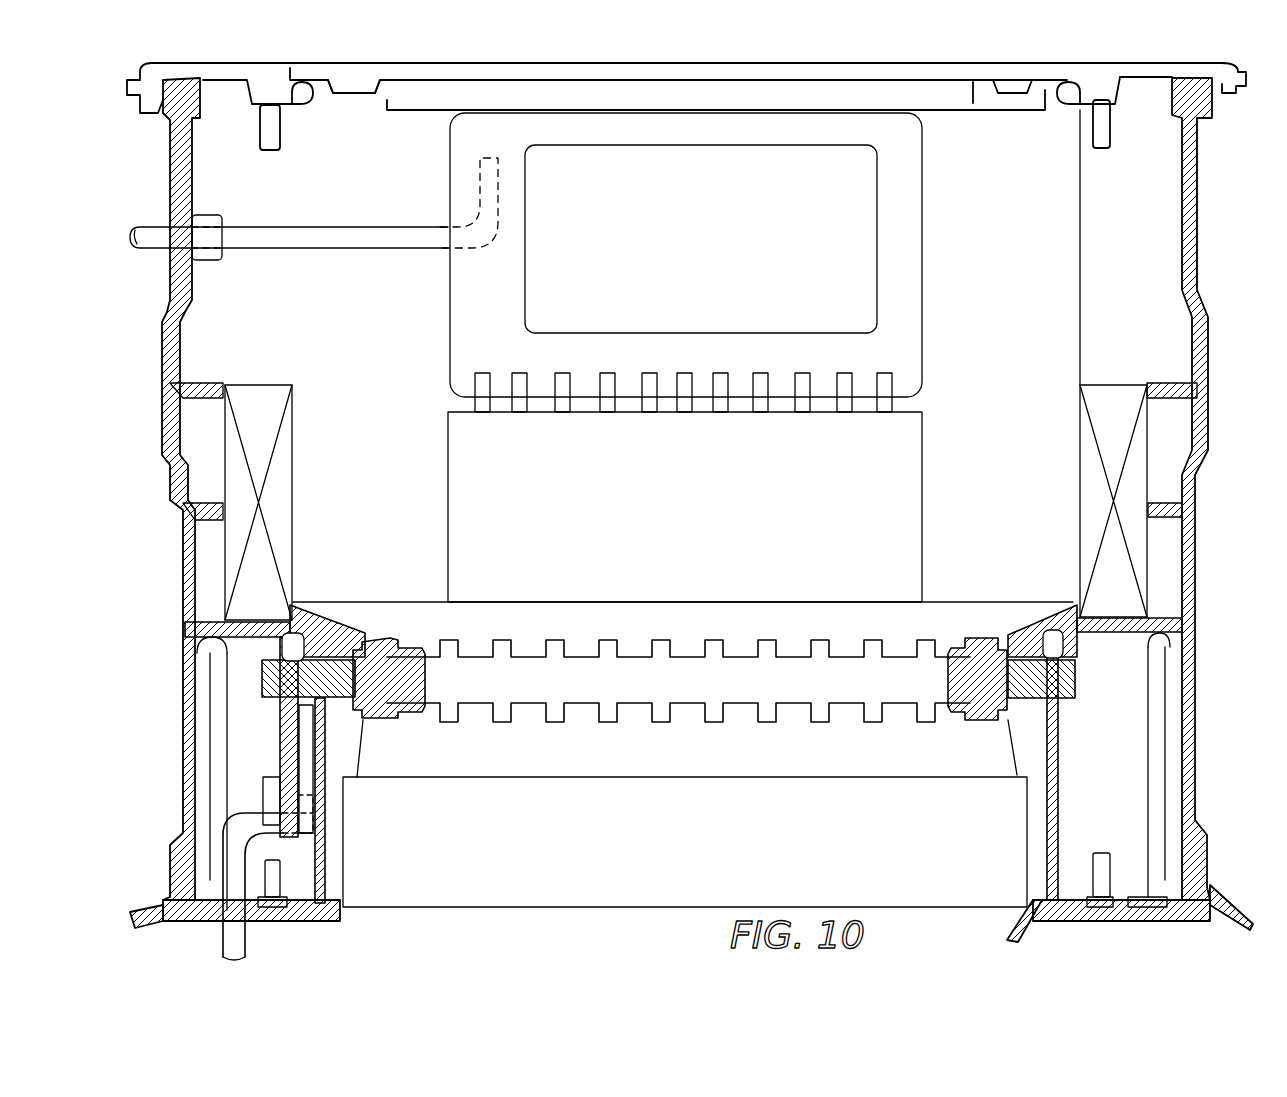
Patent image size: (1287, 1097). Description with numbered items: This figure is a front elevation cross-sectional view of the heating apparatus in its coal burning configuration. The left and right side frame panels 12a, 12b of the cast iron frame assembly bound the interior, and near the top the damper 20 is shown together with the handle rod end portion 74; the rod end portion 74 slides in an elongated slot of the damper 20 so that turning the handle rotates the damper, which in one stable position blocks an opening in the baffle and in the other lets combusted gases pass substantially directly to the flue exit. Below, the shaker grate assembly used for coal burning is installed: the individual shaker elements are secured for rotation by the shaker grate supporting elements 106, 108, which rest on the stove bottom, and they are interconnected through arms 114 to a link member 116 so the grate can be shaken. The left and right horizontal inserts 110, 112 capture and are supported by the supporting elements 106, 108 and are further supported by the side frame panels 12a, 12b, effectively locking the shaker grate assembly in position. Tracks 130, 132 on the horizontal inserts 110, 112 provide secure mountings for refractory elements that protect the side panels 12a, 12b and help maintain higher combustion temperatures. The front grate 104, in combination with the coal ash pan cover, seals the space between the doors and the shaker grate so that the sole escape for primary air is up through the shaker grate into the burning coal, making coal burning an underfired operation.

The side 12a is at (183, 570).
The side 12b is at (1195, 688).
The damper 20 is at (675, 240).
The handle rod end portion 74 is at (377, 240).
The front grate 104 is at (393, 720).
The shaker grate supporting element 106 is at (320, 870).
The shaker grate supporting element 108 is at (1060, 797).
The horizontal insert 110 is at (1047, 617).
The horizontal insert 112 is at (327, 617).
The arm 114 is at (280, 753).
The link member 116 is at (298, 797).
The track 130 is at (1110, 601).
The track 132 is at (288, 607).